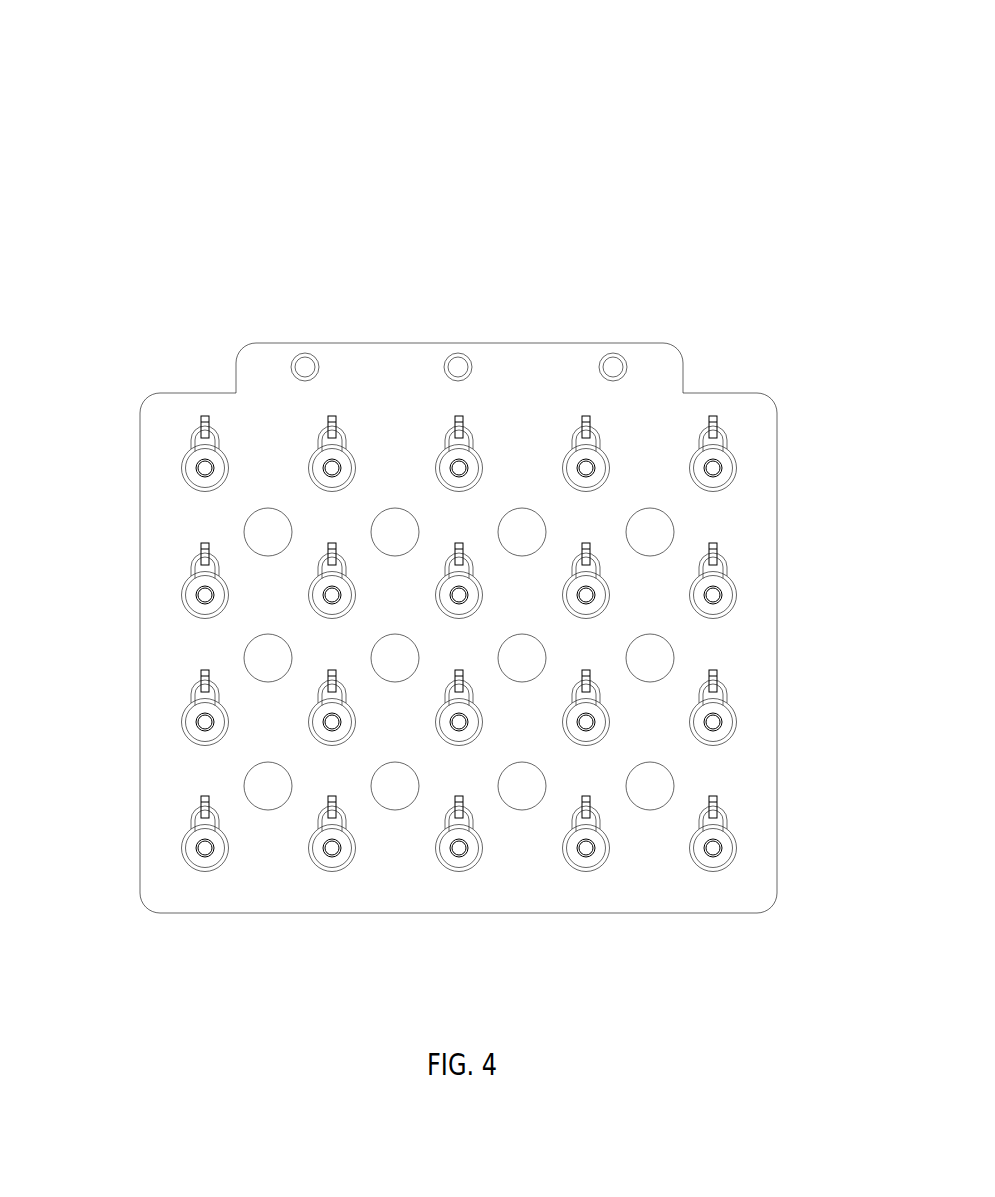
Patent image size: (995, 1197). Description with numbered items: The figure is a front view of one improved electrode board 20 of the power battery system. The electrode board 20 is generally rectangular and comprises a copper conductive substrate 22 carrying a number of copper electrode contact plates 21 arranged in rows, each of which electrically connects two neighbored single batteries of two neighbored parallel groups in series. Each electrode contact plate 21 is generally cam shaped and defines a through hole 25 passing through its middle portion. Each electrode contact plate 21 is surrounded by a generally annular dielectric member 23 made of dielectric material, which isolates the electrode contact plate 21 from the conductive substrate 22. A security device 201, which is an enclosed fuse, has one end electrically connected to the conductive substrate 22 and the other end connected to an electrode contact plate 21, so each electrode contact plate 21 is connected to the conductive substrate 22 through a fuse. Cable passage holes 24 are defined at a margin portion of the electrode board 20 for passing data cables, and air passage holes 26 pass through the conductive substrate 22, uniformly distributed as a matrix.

The electrode board 20 is at (510, 48).
The security device 201 is at (331, 418).
The electrode contact plate 21 is at (195, 458).
The conductive substrate 22 is at (643, 455).
The dielectric member 23 is at (195, 573).
The cable passage hole 24 is at (613, 365).
The through hole 25 is at (200, 850).
The air passage hole 26 is at (655, 788).